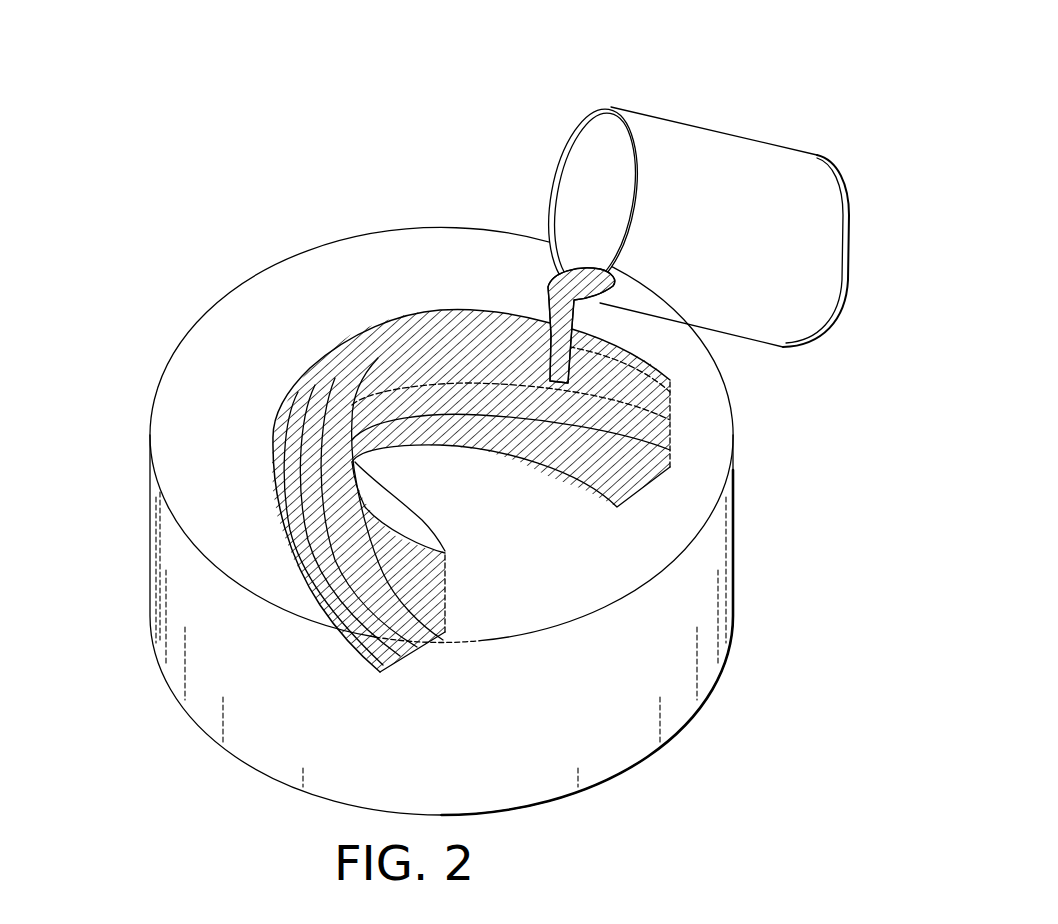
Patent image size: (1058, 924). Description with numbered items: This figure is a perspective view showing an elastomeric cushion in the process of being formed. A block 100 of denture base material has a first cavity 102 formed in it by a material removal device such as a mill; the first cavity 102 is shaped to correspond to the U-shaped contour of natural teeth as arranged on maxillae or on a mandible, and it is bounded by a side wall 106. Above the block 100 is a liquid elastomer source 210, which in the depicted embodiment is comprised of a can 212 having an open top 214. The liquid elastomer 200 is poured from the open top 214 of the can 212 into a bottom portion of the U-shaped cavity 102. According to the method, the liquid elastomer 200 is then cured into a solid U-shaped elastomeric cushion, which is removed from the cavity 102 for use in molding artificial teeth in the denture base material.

The block 100 is at (186, 322).
The first cavity 102 is at (450, 310).
The side wall 106 is at (372, 334).
The liquid elastomer 200 is at (550, 303).
The liquid elastomer source 210 is at (685, 178).
The can 212 is at (753, 160).
The open top 214 is at (566, 148).